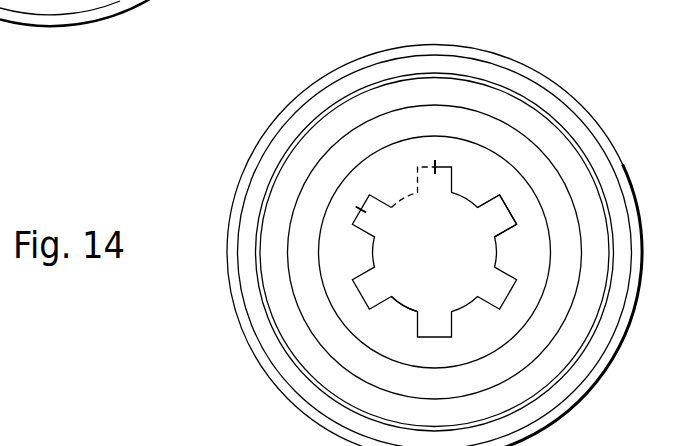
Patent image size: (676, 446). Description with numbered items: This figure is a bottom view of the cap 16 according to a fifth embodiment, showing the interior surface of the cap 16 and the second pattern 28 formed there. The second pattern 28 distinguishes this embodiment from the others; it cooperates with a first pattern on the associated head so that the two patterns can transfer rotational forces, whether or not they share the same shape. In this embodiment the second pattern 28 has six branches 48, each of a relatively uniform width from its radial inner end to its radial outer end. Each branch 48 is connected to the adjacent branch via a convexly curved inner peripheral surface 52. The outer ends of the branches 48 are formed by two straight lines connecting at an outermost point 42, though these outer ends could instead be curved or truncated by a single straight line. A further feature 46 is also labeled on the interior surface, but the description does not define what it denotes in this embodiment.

The cap 16 is at (556, 62).
The second pattern 28 is at (475, 302).
The outermost points 42 is at (356, 210).
The hidden lug outline 46 is at (384, 204).
The branches 48 is at (500, 220).
The convexly curved inner peripheral surface 52 is at (404, 311).